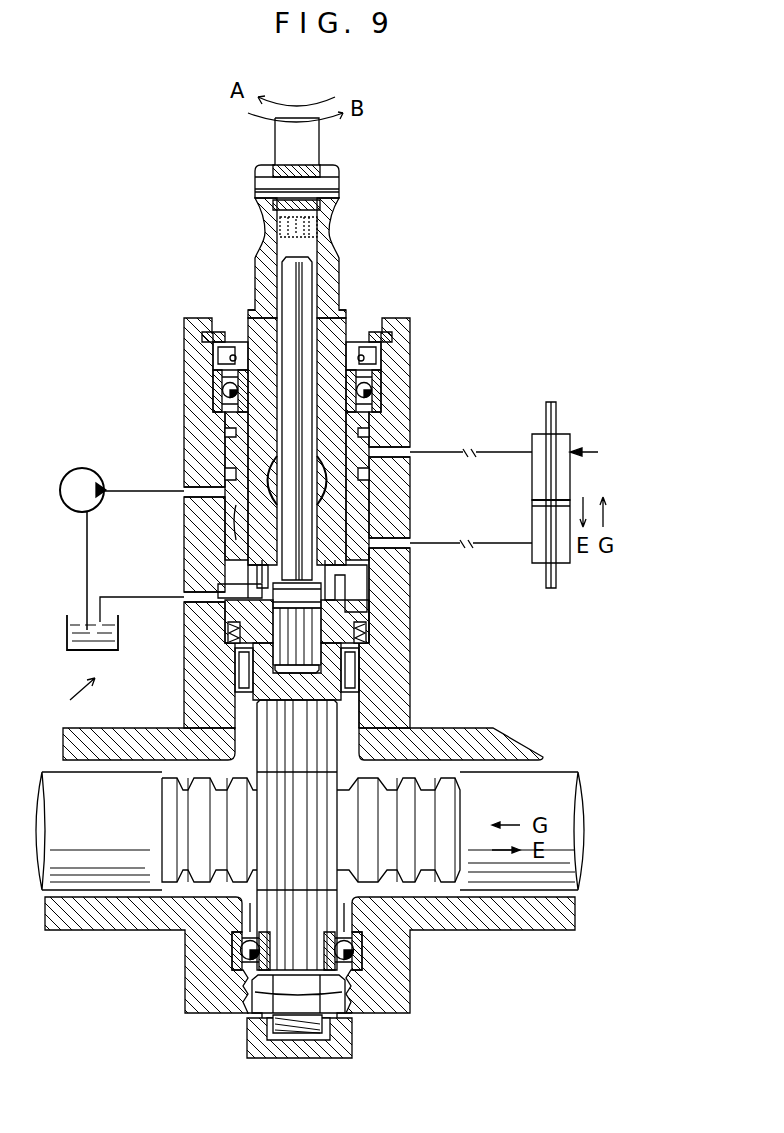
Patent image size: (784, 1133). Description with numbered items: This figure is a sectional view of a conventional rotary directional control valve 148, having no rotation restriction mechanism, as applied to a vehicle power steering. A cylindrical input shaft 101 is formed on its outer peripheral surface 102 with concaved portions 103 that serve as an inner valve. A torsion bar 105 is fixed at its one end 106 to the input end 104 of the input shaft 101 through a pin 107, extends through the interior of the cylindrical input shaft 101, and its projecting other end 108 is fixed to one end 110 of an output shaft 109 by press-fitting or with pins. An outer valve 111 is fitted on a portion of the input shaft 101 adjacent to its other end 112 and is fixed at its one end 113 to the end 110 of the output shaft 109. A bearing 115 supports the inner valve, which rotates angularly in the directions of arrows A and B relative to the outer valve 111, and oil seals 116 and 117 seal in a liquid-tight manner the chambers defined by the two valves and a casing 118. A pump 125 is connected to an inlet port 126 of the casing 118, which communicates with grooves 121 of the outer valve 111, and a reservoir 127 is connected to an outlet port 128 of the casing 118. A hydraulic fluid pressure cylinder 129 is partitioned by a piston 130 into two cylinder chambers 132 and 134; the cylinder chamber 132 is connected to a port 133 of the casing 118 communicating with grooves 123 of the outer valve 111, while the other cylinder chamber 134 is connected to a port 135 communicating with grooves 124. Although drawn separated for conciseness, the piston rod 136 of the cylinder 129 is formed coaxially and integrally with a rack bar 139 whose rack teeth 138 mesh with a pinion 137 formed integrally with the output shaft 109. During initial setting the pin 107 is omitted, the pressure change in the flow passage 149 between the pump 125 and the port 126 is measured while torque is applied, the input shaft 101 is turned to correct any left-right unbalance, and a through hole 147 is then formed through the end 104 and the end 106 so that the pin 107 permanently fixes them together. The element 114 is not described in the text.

The cylindrical input shaft 101 is at (333, 290).
The outer peripheral surface 102 is at (248, 318).
The concaved portions 103 is at (212, 478).
The input end 104 is at (339, 170).
The torsion bar 105 is at (315, 277).
The one end of torsion bar 106 is at (322, 212).
The pin 107 is at (339, 192).
The other end of torsion bar 108 is at (300, 660).
The output shaft 109 is at (272, 903).
The one end of output shaft 110 is at (355, 628).
The outer valve 111 is at (196, 440).
The other end of input shaft 112 is at (368, 497).
The one end of outer valve 113 is at (230, 582).
The ring member 114 is at (228, 622).
The bearing 115 is at (383, 350).
The oil seal 116 is at (212, 347).
The oil seal 117 is at (362, 640).
The casing 118 is at (200, 703).
The grooves 121 is at (220, 515).
The grooves 123 is at (372, 393).
The grooves 124 is at (395, 560).
The pump 125 is at (85, 475).
The inlet port 126 is at (215, 500).
The reservoir 127 is at (68, 626).
The outlet port 128 is at (210, 598).
The hydraulic fluid pressure cylinder 129 is at (603, 453).
The piston 130 is at (556, 500).
The cylinder chamber 132 is at (535, 470).
The port 133 is at (397, 452).
The cylinder chamber 134 is at (538, 525).
The port 135 is at (392, 543).
The piston rod 136 is at (556, 408).
The pinion 137 is at (335, 735).
The rack teeth 138 is at (410, 870).
The rack bar 139 is at (562, 775).
The through hole 147 is at (290, 188).
The rotary directional control valve 148 is at (58, 693).
The flow passage 149 is at (130, 490).